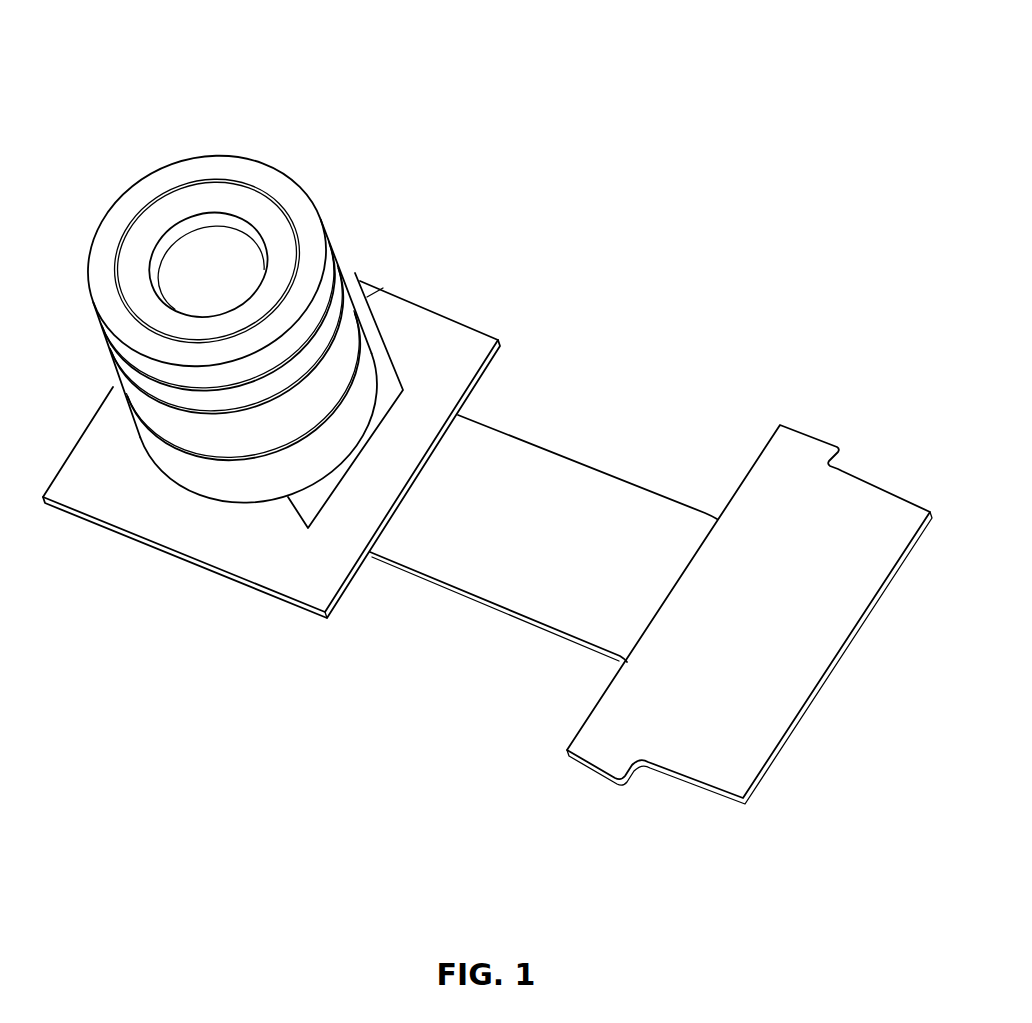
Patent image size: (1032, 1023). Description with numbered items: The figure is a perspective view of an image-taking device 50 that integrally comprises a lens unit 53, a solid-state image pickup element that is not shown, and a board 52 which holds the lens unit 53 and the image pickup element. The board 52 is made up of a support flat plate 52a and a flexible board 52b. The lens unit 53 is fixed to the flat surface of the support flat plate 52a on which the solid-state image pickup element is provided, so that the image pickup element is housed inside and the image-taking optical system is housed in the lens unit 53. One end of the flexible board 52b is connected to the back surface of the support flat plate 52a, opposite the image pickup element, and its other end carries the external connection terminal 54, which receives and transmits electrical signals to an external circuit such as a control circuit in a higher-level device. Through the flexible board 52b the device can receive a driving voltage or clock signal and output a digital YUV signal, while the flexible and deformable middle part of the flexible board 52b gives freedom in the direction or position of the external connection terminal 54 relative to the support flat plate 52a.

The image-taking device 50 is at (641, 89).
The board 52 is at (338, 697).
The support flat plate 52a is at (343, 588).
The flexible board 52b is at (453, 588).
The lens unit 53 is at (370, 284).
The external connection terminal 54 is at (700, 758).